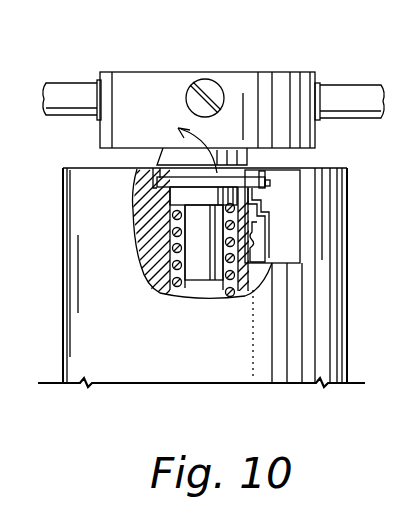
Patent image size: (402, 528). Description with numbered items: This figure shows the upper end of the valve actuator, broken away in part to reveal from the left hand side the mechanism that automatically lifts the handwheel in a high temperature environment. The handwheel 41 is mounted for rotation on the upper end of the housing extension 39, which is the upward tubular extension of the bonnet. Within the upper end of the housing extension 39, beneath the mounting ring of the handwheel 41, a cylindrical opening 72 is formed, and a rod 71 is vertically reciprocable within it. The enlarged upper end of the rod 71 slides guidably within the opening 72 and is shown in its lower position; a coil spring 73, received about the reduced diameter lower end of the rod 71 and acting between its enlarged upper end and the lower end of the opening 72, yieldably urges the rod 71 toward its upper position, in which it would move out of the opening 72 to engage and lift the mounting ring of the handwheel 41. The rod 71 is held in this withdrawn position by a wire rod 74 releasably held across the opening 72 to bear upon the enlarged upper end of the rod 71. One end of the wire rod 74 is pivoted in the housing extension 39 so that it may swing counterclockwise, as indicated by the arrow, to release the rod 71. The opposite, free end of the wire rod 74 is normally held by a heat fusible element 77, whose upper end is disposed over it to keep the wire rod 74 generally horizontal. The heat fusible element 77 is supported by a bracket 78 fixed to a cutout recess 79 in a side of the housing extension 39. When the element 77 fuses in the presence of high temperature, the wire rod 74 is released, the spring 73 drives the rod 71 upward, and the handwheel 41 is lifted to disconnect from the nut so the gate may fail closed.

The housing extension 39 is at (62, 283).
The handwheel 41 is at (62, 83).
The rod 71 is at (202, 268).
The cylindrical opening 72 is at (228, 289).
The coil spring 73 is at (175, 267).
The wire rod 74 is at (153, 170).
The heat fusible element 77 is at (262, 168).
The bracket 78 is at (263, 204).
The cutout recess 79 is at (288, 232).